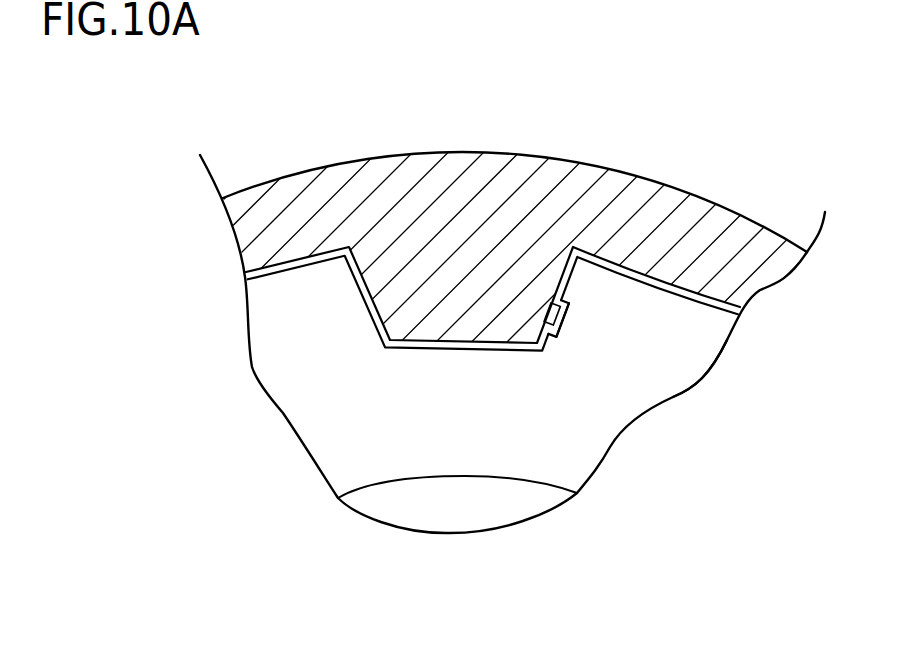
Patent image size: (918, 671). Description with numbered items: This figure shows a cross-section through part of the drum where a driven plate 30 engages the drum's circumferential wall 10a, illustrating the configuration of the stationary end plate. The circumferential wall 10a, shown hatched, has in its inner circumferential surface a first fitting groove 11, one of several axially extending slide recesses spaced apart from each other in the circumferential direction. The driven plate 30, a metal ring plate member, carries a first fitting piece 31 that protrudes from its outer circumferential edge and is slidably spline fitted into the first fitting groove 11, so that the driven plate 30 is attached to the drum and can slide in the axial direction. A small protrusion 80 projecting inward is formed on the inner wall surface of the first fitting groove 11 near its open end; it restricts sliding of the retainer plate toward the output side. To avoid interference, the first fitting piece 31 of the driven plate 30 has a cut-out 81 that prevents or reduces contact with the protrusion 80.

The circumferential wall 10a is at (399, 183).
The first fitting groove 11 is at (643, 268).
The driven plate 30 is at (587, 427).
The first fitting piece 31 is at (680, 347).
The protrusion 80 is at (547, 313).
The cut-out 81 is at (565, 315).